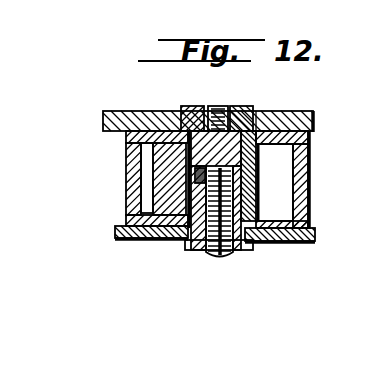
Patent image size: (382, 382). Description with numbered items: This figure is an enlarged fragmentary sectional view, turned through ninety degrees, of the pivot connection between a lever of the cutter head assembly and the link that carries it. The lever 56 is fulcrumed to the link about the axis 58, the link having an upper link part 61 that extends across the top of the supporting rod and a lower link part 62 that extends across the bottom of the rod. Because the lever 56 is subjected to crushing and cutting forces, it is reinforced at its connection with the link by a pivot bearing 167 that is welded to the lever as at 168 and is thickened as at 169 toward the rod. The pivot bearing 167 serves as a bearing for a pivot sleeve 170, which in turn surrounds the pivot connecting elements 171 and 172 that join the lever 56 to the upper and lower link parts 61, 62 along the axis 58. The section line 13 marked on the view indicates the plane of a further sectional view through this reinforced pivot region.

The section line 13- 13 is at (120, 168).
The lever 56 is at (302, 150).
The fulcrum axis 58 is at (229, 99).
The upper link part 61 is at (293, 103).
The lower link part 62 is at (278, 235).
The pivot bearing 167 is at (252, 200).
The weld 168 is at (162, 131).
The thickened portion 169 is at (152, 182).
The pivot sleeve 170 is at (251, 121).
The pivot connecting element 171 is at (185, 99).
The pivot connecting element 172 is at (186, 243).